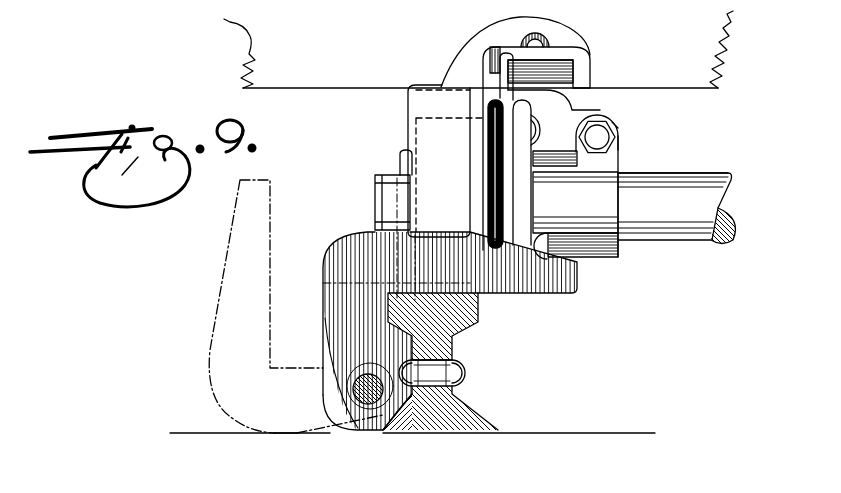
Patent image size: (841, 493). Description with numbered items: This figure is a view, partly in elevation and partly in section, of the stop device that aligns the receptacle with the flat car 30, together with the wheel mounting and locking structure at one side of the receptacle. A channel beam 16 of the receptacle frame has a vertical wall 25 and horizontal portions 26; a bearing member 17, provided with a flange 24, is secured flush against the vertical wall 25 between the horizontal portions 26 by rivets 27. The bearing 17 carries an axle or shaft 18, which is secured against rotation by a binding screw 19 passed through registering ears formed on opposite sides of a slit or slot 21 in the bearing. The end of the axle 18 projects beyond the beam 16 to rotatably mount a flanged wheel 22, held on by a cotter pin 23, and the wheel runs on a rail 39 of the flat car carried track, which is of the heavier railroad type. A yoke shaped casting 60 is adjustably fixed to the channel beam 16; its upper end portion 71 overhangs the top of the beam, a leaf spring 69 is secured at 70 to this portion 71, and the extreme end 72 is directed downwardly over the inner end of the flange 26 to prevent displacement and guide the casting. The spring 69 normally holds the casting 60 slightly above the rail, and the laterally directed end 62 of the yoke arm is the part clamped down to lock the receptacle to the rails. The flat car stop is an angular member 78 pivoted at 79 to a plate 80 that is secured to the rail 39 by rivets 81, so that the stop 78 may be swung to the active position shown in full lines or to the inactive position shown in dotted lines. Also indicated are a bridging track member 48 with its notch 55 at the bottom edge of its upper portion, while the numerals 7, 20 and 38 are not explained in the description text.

The frame member 7 is at (246, 53).
The channel beam 16 is at (551, 128).
The bearing member 17 is at (607, 185).
The axle or shaft 18 is at (696, 195).
The binding screw 19 is at (612, 122).
The link 20 is at (620, 135).
The slit or slot 21 is at (552, 240).
The flanged wheel 22 is at (432, 118).
The cotter pin 23 is at (400, 153).
The bearing flange 24 is at (531, 198).
The vertical wall 25 is at (513, 180).
The horizontal portion 26 is at (524, 96).
The rivet 27 is at (600, 130).
The flat car 30 is at (545, 433).
The slot 38 is at (493, 203).
The rail 39 is at (452, 330).
The complementary member 48 is at (415, 391).
The notch 55 is at (247, 463).
The yoke shaped casting 60 is at (443, 93).
The lateral end of yoke arm 62 is at (327, 243).
The leaf spring 69 is at (496, 56).
The spring securing point 70 is at (578, 47).
The upper end portion of casting 71 is at (509, 49).
The downwardly directed end 72 is at (582, 82).
The angular stop member 78 is at (237, 292).
The pivot 79 is at (364, 397).
The plate 80 is at (413, 417).
The rivet 81 is at (465, 390).